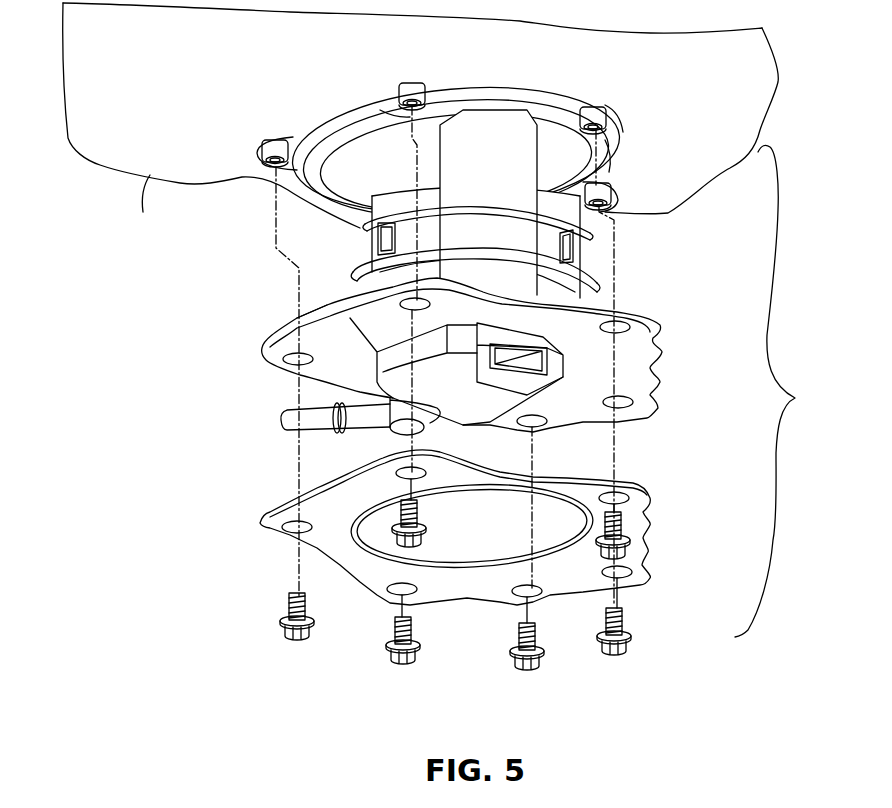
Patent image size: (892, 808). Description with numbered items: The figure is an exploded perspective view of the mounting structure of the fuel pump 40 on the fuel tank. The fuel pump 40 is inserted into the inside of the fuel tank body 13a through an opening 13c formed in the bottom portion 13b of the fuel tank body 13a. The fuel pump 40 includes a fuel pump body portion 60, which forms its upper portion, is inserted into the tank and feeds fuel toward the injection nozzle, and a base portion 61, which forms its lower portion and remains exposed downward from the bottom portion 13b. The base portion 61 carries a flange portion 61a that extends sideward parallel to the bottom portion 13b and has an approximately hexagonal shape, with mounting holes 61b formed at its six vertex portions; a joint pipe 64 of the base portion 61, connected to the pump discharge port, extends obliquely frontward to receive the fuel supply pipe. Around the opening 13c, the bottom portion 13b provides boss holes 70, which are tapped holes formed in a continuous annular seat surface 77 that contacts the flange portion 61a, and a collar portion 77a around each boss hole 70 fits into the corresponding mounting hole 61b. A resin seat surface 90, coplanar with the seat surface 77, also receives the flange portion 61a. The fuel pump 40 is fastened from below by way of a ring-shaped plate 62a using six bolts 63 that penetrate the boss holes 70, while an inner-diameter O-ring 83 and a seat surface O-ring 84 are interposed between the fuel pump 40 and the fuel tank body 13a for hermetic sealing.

The fuel tank body 13a is at (100, 176).
The bottom portion 13b is at (145, 208).
The opening 13c is at (357, 162).
The seat surface 90 is at (327, 122).
The boss holes 70 is at (382, 110).
The collar portion 77a is at (408, 88).
The seat surface 77 is at (623, 156).
The inner-diameter O-ring 83 is at (580, 236).
The fuel pump body portion 60 is at (597, 247).
The seat surface O-ring 84 is at (598, 290).
The fuel pump 40 is at (343, 281).
The flange portion 61a is at (317, 335).
The mounting holes 61b is at (283, 359).
The base portion 61 is at (655, 370).
The joint pipe 64 is at (283, 428).
The ring-shaped plate 62a is at (660, 517).
The bolts 63 is at (428, 532).